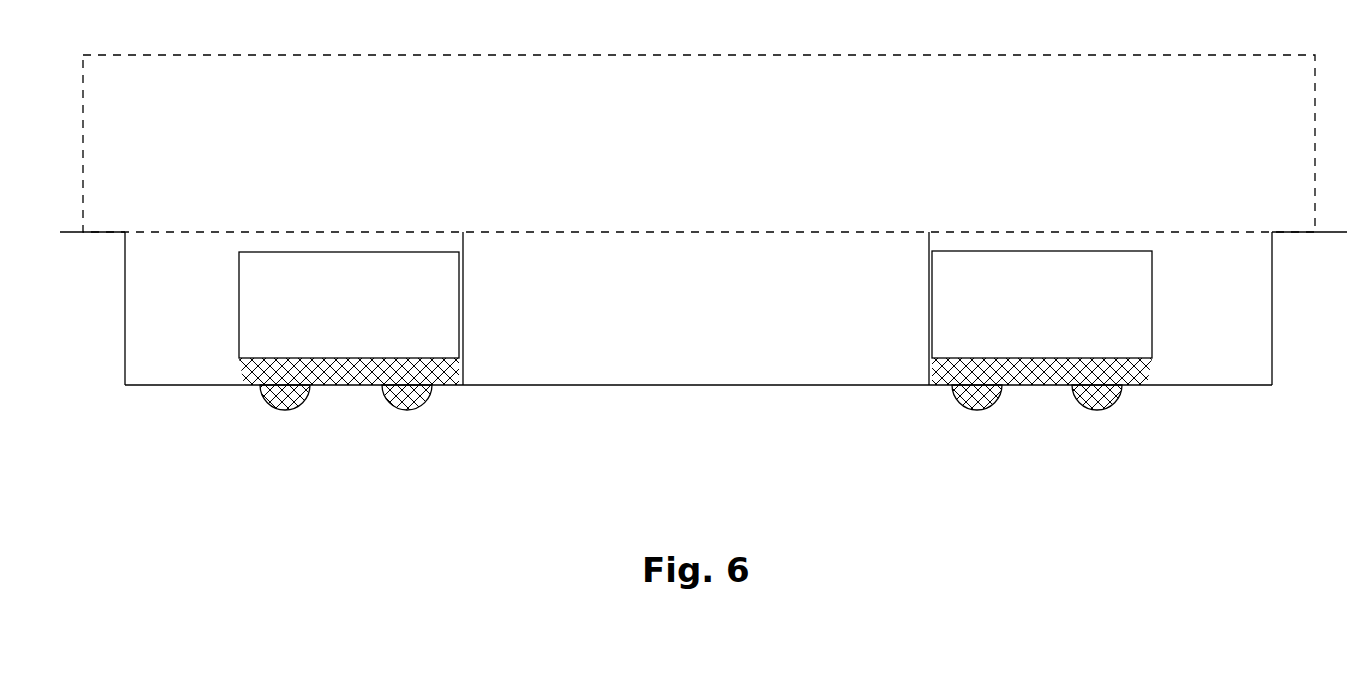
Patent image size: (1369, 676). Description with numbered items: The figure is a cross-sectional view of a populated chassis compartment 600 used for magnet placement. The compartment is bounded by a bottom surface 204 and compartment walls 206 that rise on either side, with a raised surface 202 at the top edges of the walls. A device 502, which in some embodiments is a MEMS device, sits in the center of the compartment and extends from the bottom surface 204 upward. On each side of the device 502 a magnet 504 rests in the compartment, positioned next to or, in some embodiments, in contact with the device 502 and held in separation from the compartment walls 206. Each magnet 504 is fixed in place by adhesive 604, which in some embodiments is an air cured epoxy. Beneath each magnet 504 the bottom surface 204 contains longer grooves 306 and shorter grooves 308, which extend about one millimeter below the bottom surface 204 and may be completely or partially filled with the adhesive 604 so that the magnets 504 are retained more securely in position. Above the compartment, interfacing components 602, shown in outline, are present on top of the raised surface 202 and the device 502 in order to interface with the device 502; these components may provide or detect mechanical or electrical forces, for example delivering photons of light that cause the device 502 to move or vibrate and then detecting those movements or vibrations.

The chassis compartment 600 is at (352, 530).
The interfacing components 602 is at (699, 143).
The raised surface 202 is at (95, 246).
The bottom surface 204 is at (190, 393).
The compartment walls 206 is at (125, 312).
The device 502 is at (696, 308).
The magnets 504 is at (695, 304).
The adhesive 604 is at (241, 372).
The longer grooves 306 is at (272, 406).
The shorter grooves 308 is at (415, 410).